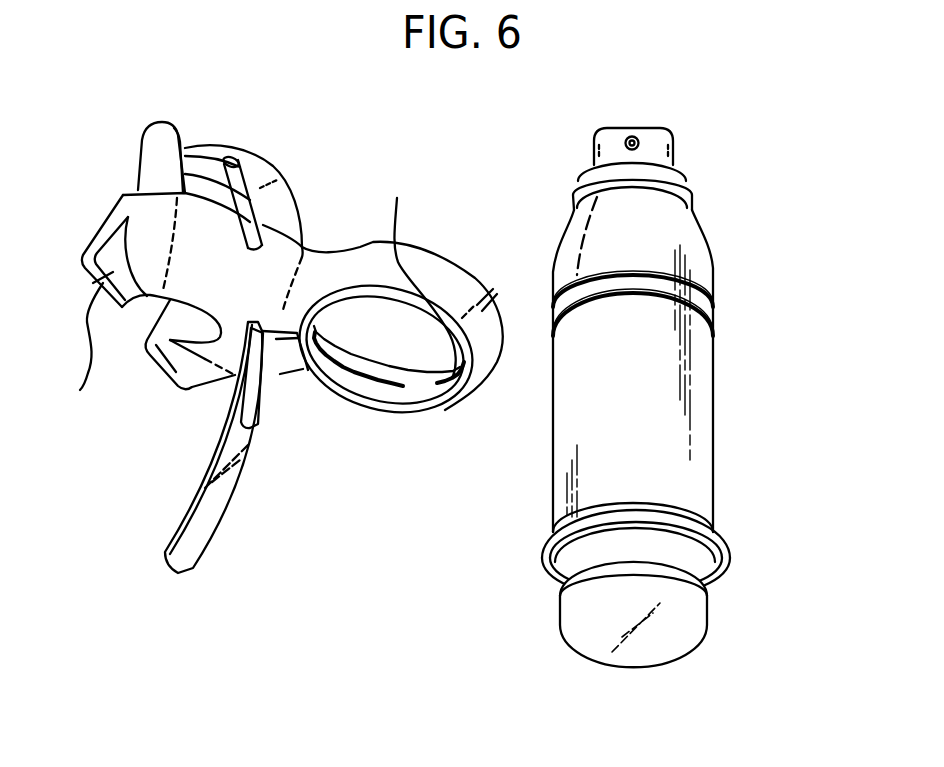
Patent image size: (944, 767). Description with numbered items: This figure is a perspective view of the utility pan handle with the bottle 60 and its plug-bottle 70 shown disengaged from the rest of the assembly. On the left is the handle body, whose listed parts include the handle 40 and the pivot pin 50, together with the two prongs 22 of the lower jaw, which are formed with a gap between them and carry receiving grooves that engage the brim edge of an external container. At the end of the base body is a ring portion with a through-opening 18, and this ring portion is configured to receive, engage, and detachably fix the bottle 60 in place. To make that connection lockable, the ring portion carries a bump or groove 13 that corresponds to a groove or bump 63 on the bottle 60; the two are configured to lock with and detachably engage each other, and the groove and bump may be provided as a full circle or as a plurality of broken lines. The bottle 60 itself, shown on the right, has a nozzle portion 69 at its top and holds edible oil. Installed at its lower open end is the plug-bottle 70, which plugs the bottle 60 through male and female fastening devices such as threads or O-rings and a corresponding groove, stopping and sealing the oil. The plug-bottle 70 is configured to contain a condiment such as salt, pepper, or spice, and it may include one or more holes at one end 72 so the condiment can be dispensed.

The bump or groove 13 is at (340, 367).
The through-opening 18 is at (385, 393).
The prongs 22 is at (178, 359).
The handle 40 is at (214, 497).
The pivot pin 50 is at (238, 186).
The bottle 60 is at (693, 423).
The groove or bump 63 is at (713, 290).
The nozzle portion 69 is at (629, 137).
The plug-bottle 70 is at (692, 567).
The end 72 is at (663, 643).